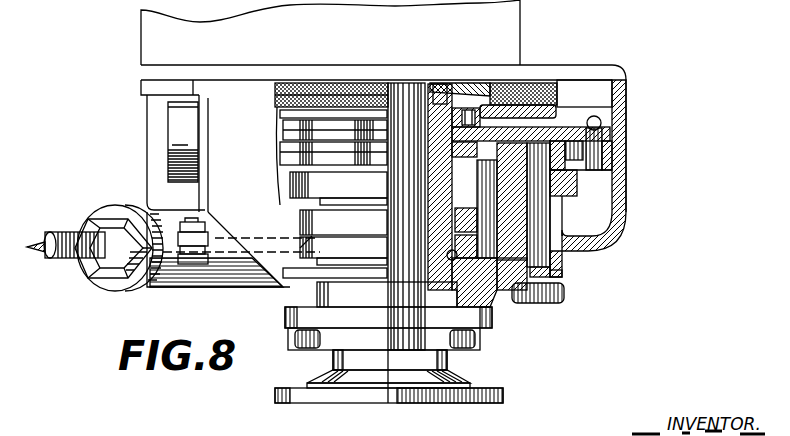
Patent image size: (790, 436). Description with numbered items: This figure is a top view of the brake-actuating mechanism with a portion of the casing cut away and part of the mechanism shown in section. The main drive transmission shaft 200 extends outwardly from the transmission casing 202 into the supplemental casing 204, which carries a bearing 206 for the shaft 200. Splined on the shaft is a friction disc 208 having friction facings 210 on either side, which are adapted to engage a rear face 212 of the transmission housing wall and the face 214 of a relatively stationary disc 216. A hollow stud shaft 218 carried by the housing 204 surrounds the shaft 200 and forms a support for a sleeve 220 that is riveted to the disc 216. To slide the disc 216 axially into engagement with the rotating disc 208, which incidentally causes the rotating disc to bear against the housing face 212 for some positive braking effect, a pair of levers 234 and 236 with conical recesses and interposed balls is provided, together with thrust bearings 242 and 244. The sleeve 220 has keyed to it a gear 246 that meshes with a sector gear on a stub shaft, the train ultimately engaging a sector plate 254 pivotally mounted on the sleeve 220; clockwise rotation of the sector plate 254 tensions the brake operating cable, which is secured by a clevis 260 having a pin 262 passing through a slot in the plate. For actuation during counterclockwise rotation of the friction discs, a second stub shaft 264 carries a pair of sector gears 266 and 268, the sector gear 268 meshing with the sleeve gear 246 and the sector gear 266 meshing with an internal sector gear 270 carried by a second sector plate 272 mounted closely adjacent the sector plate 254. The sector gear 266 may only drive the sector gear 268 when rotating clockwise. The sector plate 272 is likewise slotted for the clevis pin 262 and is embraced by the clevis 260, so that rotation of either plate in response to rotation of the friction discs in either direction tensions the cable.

The main drive transmission shaft 200 is at (425, 140).
The transmission casing 202 is at (158, 36).
The supplemental casing 204 is at (616, 240).
The bearing 206 is at (493, 300).
The friction disc 208 is at (473, 90).
The friction facings 210 is at (612, 92).
The rear face of transmission housing wall 212 is at (527, 79).
The face of stationary disc 214 is at (558, 110).
The relatively stationary disc 216 is at (620, 118).
The hollow stud shaft 218 is at (438, 80).
The sleeve 220 is at (394, 95).
The lever 234 is at (313, 247).
The lever 236 is at (308, 224).
The thrust bearing 242 is at (563, 293).
The thrust bearing 244 is at (563, 250).
The gear 246 is at (577, 200).
The sector plate 254 is at (300, 152).
The clevis 260 is at (307, 128).
The pin 262 is at (300, 185).
The second stub shaft 264 is at (600, 237).
The sector gear 266 is at (583, 162).
The sector gear 268 is at (577, 188).
The internal sector gear 270 is at (628, 160).
The second sector plate 272 is at (293, 133).